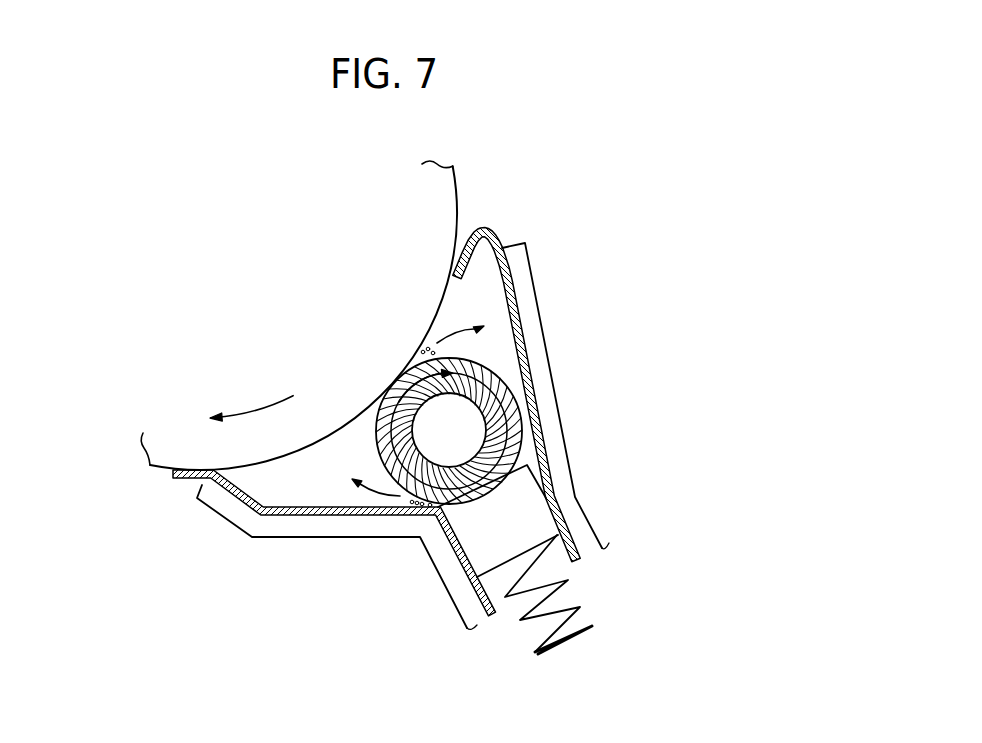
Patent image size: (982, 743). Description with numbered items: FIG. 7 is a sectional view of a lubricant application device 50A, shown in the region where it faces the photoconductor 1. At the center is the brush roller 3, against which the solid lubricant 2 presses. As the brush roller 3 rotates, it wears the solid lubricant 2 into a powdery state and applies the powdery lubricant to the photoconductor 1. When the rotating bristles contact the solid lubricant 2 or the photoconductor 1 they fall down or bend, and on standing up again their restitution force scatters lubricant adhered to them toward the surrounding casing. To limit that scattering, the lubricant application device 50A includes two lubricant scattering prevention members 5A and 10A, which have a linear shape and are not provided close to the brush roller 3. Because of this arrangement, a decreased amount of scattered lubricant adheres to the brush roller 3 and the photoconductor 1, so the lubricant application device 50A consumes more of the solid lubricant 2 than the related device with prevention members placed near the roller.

The photoconductor 1 is at (297, 311).
The lubricant application device 50A is at (585, 173).
The lubricant scattering prevention member 10A is at (549, 345).
The solid lubricant 2 is at (545, 511).
The brush roller 3 is at (377, 441).
The lubricant scattering prevention member 5A is at (337, 537).